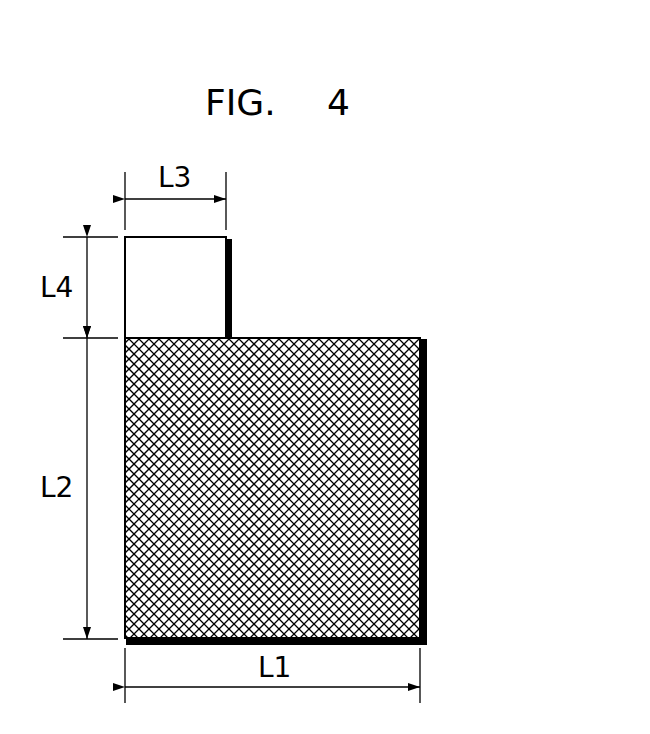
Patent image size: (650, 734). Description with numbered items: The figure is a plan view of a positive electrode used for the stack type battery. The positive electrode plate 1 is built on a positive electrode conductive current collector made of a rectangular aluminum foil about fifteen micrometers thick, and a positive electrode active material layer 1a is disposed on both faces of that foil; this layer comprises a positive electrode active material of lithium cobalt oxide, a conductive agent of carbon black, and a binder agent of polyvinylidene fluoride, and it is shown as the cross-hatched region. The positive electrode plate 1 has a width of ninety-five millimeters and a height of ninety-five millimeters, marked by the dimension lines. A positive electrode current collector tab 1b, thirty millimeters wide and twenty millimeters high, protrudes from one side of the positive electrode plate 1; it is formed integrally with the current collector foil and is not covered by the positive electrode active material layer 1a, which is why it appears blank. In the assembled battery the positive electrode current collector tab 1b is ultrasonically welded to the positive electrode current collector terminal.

The positive electrode plate 1 is at (325, 436).
The positive electrode active material layer 1a is at (402, 488).
The positive electrode current collector tab 1b is at (207, 270).